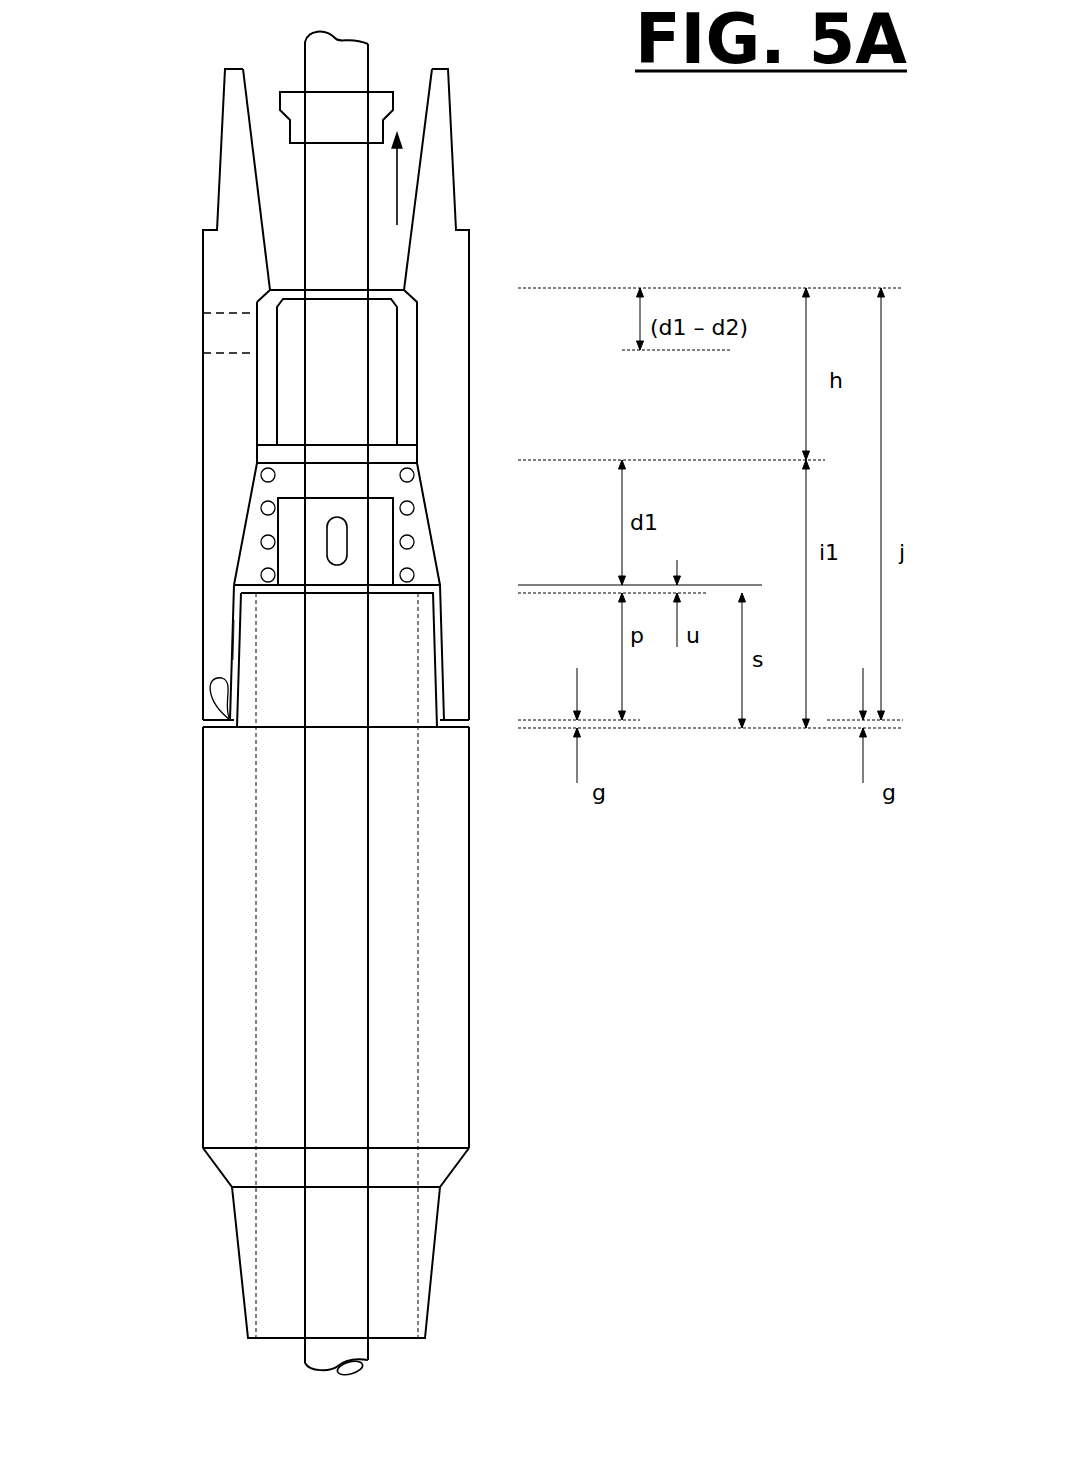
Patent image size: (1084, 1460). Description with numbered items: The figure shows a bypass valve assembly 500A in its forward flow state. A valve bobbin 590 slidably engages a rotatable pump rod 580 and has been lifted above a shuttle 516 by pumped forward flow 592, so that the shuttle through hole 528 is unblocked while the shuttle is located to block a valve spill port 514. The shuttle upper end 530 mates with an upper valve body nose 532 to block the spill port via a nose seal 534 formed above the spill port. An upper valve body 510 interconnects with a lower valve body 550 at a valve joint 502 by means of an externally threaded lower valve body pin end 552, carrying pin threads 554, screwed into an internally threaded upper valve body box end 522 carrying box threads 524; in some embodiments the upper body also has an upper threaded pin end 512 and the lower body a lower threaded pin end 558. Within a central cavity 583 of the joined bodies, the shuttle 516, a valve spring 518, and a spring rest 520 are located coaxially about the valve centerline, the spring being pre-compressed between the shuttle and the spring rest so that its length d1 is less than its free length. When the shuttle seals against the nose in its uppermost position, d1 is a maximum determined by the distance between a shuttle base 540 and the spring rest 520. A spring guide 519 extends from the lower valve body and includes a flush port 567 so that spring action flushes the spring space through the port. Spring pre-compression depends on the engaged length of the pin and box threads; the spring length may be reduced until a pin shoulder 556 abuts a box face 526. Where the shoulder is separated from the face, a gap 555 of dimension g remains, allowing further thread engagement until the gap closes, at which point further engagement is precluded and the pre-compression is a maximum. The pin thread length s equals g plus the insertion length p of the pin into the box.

The bypass valve assembly 500A is at (798, 196).
The rotatable pump rod 580 is at (303, 60).
The valve bobbin 590 is at (385, 92).
The pumped forward flow 592 is at (398, 197).
The upper body upper threaded pin end 512 is at (217, 180).
The shuttle upper end 530 is at (268, 290).
The nose seal 534 is at (405, 290).
The upper valve body nose 532 is at (412, 298).
The valve spill port 514 is at (205, 315).
The shuttle through hole 528 is at (295, 385).
The shuttle 516 is at (272, 417).
The shuttle base 540 is at (393, 447).
The upper valve body 510 is at (492, 419).
The valve spring 518 is at (261, 507).
The spring guide 519 is at (323, 572).
The flush port 567 is at (340, 547).
The central cavity 583 is at (420, 560).
The spring rest 520 is at (439, 578).
The lower valve body pin end 552 is at (430, 637).
The upper valve body box end 522 is at (220, 627).
The box threads 524 is at (233, 656).
The pin shoulder 556 is at (215, 726).
The gap 555 is at (223, 730).
The pin threads 554 is at (219, 727).
The valve joint 502 is at (462, 697).
The box face 526 is at (458, 727).
The lower valve body 550 is at (497, 1014).
The lower body lower threaded pin end 558 is at (247, 1225).